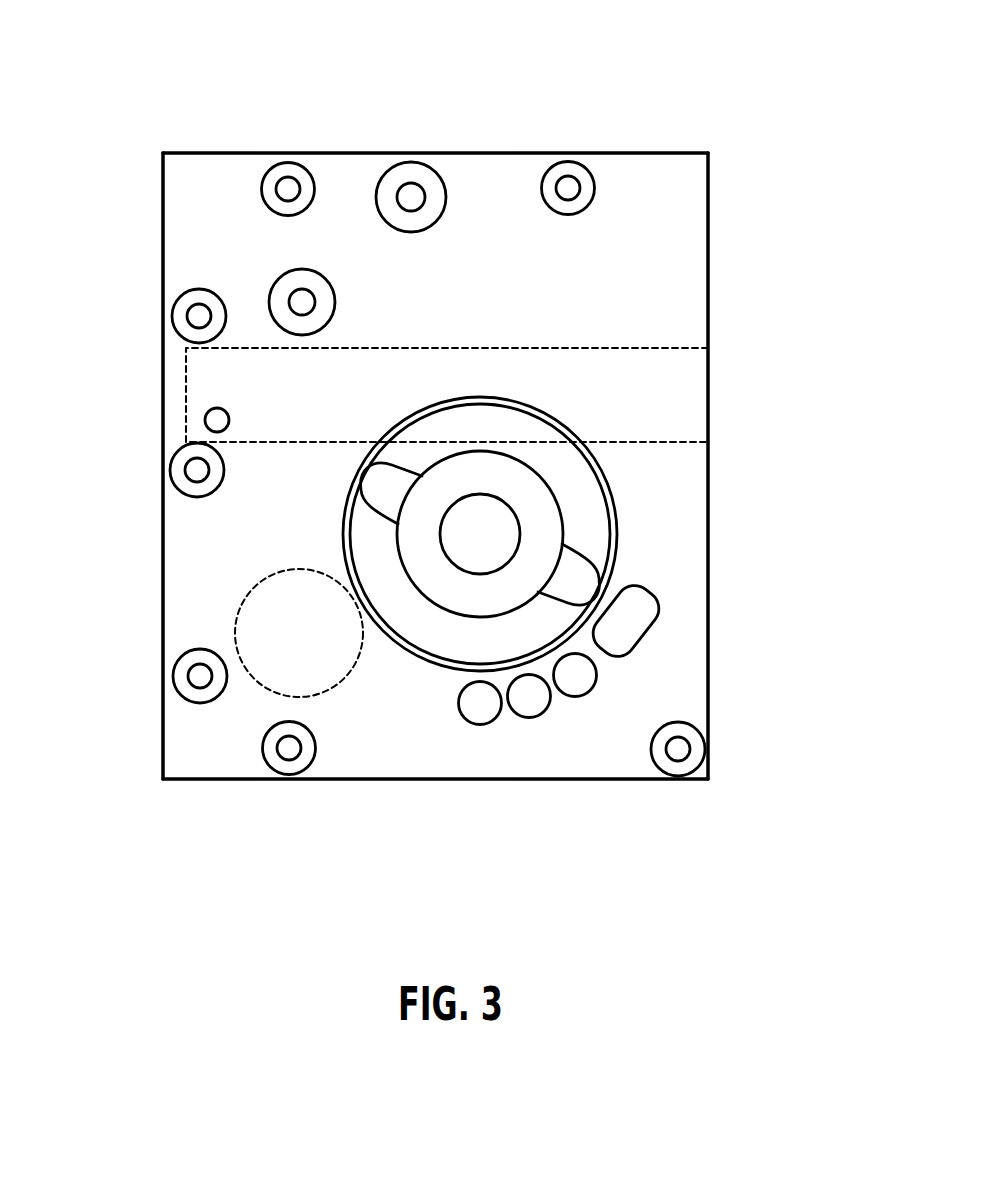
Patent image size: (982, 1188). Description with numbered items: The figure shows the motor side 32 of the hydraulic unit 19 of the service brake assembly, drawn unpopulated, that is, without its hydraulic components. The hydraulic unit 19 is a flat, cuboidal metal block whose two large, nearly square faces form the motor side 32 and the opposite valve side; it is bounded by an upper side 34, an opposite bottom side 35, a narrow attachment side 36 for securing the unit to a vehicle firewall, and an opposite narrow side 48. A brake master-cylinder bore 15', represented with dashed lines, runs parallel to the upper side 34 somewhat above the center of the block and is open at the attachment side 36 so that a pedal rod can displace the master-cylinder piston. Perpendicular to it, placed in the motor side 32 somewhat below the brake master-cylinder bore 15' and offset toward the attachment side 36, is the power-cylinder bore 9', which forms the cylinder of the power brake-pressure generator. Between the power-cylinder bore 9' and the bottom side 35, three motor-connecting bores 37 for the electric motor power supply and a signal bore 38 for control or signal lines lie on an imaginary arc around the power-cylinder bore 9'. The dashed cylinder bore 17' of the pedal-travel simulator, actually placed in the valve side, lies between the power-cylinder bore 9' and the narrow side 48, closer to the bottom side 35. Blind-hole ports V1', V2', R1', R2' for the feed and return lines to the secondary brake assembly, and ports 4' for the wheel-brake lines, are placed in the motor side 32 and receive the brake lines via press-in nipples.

The hydraulic unit 19 is at (186, 107).
The ports 4' is at (388, 416).
The port V1' is at (411, 144).
The port V2' is at (213, 285).
The port R1' is at (289, 802).
The port R2' is at (568, 137).
The upper side 34 is at (491, 141).
The bottom side 35 is at (443, 779).
The attachment side 36 is at (719, 275).
The narrow side 48 is at (151, 570).
The motor side 32 is at (422, 318).
The brake master-cylinder bore 15' is at (493, 395).
The power-cylinder bore 9' is at (575, 534).
The signal bore 38 is at (631, 625).
The motor-connecting bores 37 is at (573, 683).
The cylinder bore 17' is at (308, 705).